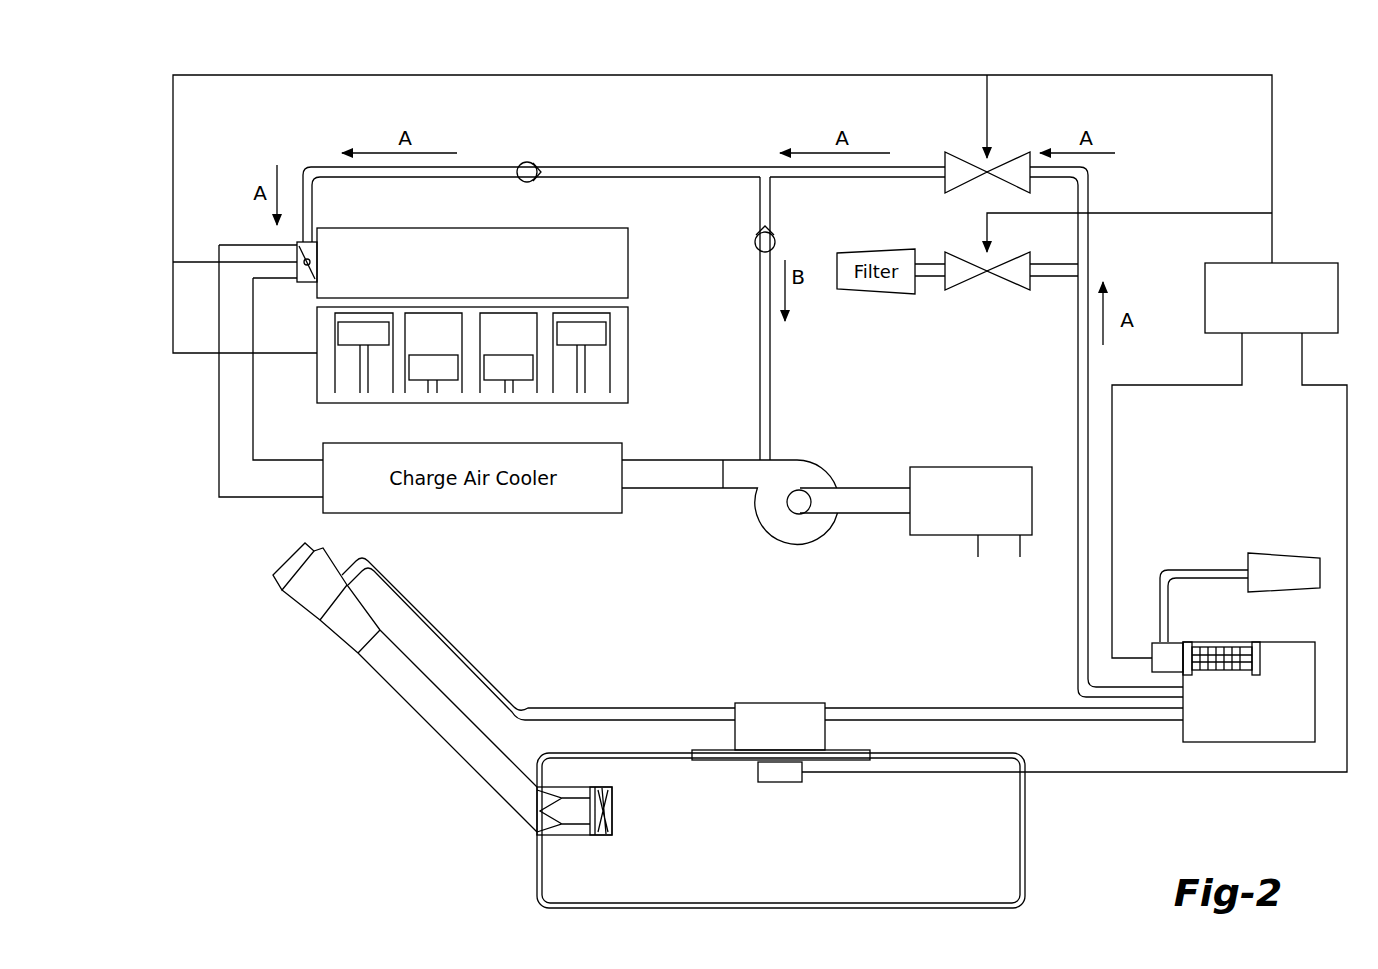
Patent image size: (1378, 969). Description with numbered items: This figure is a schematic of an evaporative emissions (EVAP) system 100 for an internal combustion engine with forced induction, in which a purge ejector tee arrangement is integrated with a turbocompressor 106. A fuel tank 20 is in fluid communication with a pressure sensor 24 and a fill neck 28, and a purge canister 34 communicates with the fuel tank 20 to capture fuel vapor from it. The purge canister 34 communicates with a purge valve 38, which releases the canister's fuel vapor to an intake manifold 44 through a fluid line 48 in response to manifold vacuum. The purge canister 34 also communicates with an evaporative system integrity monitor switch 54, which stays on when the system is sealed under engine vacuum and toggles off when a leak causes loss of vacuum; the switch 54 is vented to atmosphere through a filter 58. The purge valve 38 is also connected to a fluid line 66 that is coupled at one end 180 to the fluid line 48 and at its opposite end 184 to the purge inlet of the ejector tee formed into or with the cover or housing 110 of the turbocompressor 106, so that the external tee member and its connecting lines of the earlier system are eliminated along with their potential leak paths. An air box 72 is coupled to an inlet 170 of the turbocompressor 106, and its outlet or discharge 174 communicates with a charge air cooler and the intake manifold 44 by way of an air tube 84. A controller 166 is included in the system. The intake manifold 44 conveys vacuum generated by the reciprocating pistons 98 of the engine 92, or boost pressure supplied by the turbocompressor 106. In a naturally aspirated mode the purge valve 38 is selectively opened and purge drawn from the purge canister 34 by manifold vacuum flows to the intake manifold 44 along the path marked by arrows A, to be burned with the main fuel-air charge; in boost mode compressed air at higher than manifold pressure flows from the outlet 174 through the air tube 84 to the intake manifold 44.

The fuel tank 20 is at (1028, 832).
The pressure sensor 24 is at (763, 782).
The fill neck 28 is at (427, 727).
The purge canister 34 is at (1200, 742).
The purge valve 38 is at (1013, 150).
The intake manifold 44 is at (560, 228).
The fluid line 48 is at (625, 167).
The ESIM switch 54 is at (1150, 650).
The filter 58 is at (1287, 553).
The fluid line 66 is at (770, 203).
The air box 72 is at (983, 466).
The air tube 84 is at (219, 410).
The engine 92 is at (630, 337).
The reciprocating pistons 98 is at (350, 347).
The EVAP system 100 is at (1158, 183).
The turbocompressor 106 is at (807, 545).
The cover or housing 110 is at (773, 532).
The controller 166 is at (1318, 262).
The inlet 170 is at (790, 502).
The outlet 174 is at (722, 472).
The one end 180 is at (758, 178).
The opposite end 184 is at (772, 460).